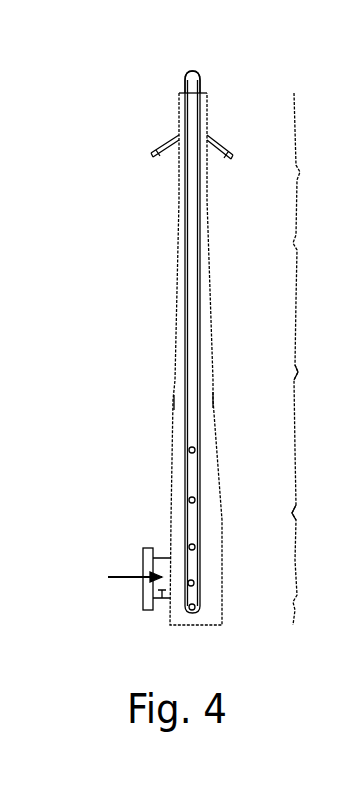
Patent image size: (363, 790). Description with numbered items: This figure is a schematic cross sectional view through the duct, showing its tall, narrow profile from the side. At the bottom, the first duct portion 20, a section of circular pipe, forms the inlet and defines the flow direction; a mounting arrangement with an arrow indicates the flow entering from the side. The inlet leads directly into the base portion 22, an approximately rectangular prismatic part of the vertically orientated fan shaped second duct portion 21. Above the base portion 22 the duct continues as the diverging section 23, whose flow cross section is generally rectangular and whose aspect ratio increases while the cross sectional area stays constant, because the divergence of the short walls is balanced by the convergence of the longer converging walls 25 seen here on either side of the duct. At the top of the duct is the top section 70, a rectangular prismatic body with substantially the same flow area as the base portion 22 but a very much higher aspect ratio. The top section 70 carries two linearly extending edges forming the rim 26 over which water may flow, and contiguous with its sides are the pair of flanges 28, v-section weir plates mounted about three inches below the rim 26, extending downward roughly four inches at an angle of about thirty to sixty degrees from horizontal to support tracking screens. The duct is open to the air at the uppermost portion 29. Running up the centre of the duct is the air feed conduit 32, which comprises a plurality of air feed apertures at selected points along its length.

The first duct portion 20 is at (160, 605).
The second duct portion 21 is at (224, 493).
The base portion 22 is at (311, 544).
The diverging section 23 is at (312, 380).
The converging walls 25 is at (174, 396).
The rim 26 is at (180, 113).
The flanges 28 is at (151, 155).
The uppermost portion 29 is at (191, 64).
The air feed conduit 32 is at (187, 237).
The top section 70 is at (313, 359).